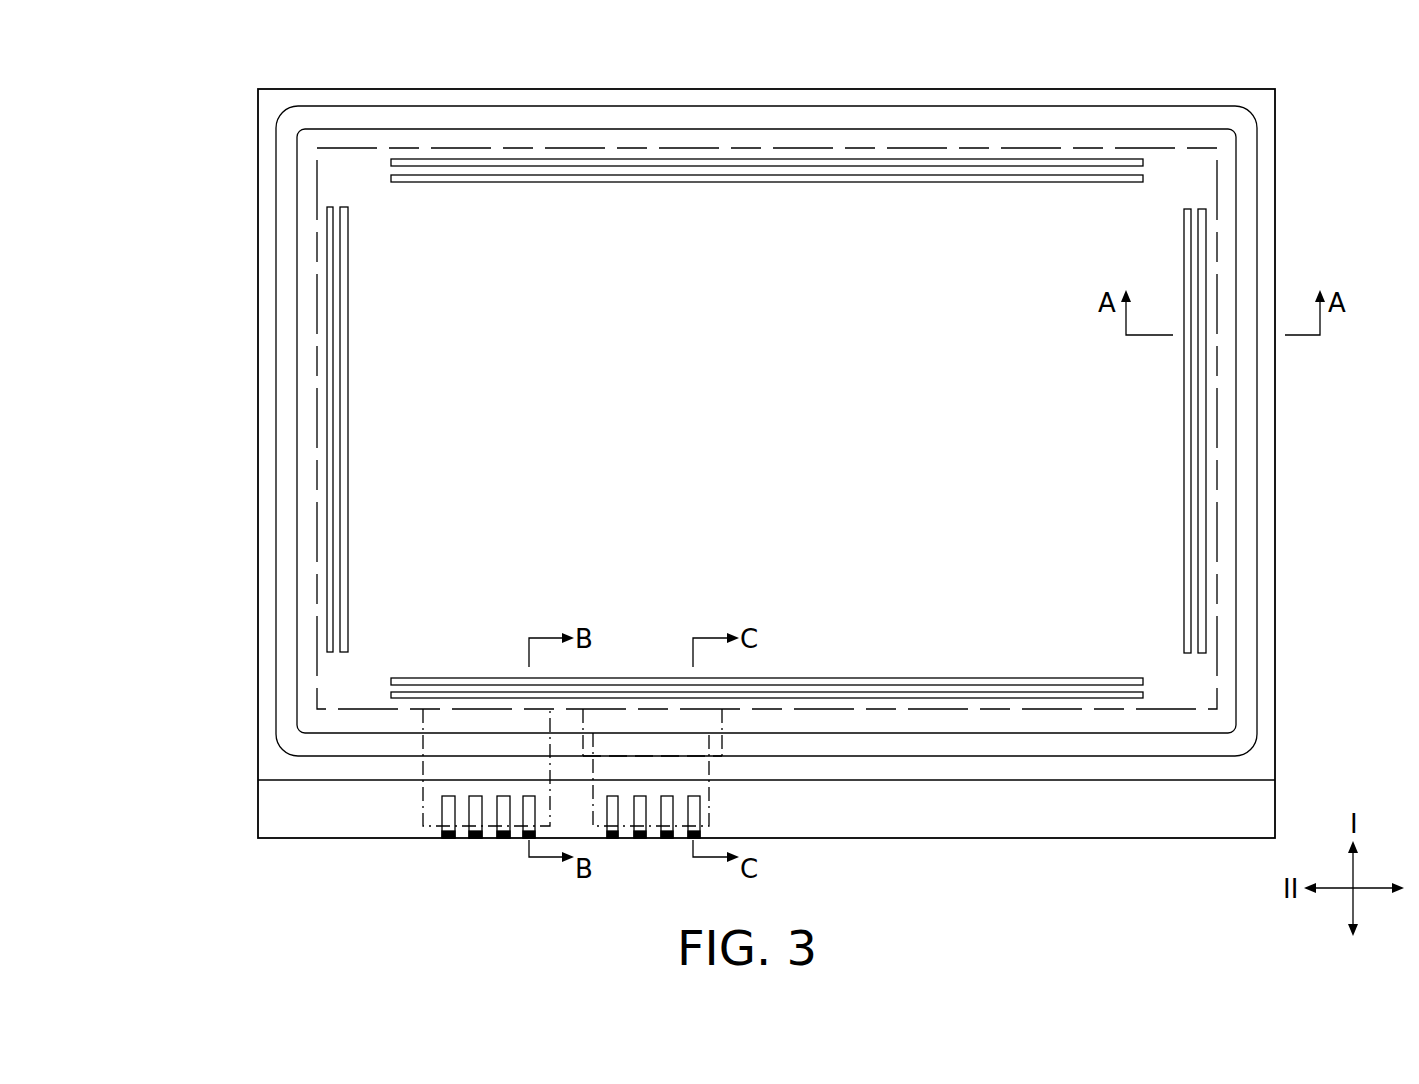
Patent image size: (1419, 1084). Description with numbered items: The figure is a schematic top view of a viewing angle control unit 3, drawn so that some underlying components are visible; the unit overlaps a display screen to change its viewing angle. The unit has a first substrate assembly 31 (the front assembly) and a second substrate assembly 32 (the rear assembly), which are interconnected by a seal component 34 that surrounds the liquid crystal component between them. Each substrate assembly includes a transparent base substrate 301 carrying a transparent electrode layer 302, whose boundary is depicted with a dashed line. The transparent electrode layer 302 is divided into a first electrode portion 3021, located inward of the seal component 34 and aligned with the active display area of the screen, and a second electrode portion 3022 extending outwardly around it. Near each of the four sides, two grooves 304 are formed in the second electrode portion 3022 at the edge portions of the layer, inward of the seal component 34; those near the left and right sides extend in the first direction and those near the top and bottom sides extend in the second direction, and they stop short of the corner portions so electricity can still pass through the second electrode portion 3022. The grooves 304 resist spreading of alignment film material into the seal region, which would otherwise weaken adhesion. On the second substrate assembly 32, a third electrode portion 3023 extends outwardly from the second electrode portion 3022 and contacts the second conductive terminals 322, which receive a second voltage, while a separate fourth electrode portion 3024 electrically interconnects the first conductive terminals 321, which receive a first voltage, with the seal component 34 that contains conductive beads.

The viewing angle control unit 3 is at (204, 80).
The first substrate assembly 31 is at (238, 631).
The second substrate assembly 32 is at (282, 846).
The transparent base substrate 301 is at (267, 511).
The transparent electrode layer 302 is at (317, 370).
The first electrode portion 3021 is at (862, 252).
The second electrode portion 3022 is at (1177, 672).
The third electrode portion 3023 is at (431, 804).
The fourth electrode portion 3024 is at (703, 789).
The grooves 304 is at (504, 177).
The first conductive terminals 321 is at (693, 820).
The second conductive terminals 322 is at (528, 820).
The seal component 34 is at (1248, 510).